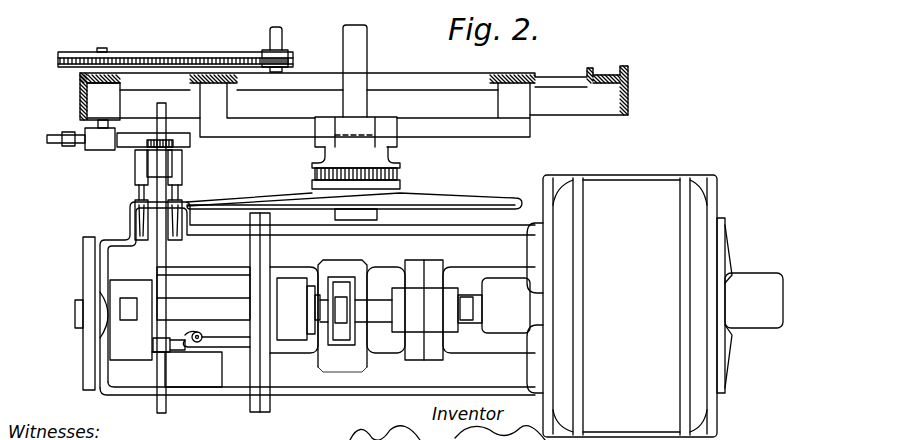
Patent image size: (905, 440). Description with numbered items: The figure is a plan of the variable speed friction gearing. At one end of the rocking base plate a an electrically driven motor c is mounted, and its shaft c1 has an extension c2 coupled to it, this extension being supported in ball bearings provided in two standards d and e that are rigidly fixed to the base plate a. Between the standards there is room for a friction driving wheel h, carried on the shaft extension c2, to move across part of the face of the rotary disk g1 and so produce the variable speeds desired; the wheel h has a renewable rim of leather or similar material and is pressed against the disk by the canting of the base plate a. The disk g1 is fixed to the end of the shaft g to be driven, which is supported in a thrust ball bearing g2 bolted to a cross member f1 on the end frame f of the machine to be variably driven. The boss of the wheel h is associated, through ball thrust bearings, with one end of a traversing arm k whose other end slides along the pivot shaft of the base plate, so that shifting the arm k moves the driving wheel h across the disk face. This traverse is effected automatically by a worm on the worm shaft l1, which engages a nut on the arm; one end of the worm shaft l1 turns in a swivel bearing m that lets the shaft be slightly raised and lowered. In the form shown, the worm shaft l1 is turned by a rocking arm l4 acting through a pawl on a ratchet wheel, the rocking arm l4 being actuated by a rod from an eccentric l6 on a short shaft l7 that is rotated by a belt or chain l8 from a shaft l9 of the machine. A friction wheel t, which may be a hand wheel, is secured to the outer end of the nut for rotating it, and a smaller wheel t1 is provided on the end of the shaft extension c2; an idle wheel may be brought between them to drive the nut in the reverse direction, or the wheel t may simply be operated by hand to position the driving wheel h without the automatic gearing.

The belt or chain l8 is at (200, 52).
The short shaft l7 is at (100, 48).
The shaft of the machine l9 is at (283, 32).
The cross member f1 is at (350, 102).
The end frame f is at (585, 90).
The shaft to be driven g is at (367, 33).
The thrust ball bearing g2 is at (400, 181).
The rotary disk g1 is at (507, 194).
The rocking base plate a is at (317, 298).
The swivel bearing m is at (183, 166).
The eccentric l6 is at (94, 149).
The rocking arm l4 is at (63, 134).
The worm shaft l1 is at (167, 412).
The friction wheel t is at (84, 370).
The smaller wheel t1 is at (80, 306).
The standard e is at (136, 350).
The shaft extension c2 is at (203, 307).
The friction driving wheel h is at (254, 374).
The traversing arm k is at (298, 309).
The standard d is at (340, 347).
The motor shaft c1 is at (471, 324).
The electrically driven motor c is at (655, 306).